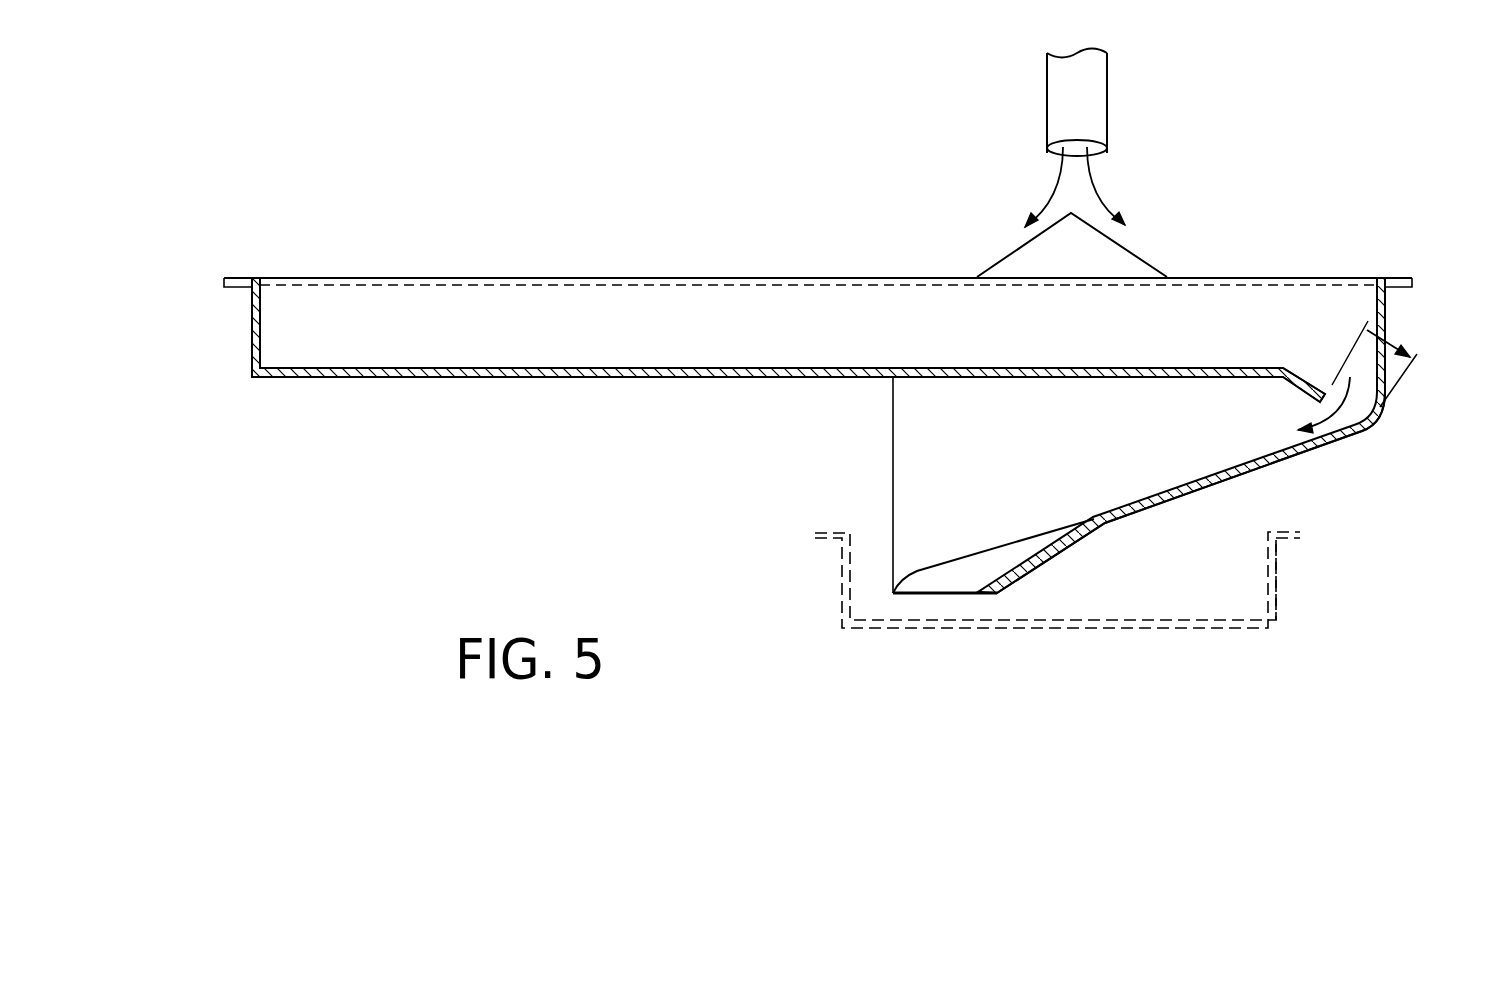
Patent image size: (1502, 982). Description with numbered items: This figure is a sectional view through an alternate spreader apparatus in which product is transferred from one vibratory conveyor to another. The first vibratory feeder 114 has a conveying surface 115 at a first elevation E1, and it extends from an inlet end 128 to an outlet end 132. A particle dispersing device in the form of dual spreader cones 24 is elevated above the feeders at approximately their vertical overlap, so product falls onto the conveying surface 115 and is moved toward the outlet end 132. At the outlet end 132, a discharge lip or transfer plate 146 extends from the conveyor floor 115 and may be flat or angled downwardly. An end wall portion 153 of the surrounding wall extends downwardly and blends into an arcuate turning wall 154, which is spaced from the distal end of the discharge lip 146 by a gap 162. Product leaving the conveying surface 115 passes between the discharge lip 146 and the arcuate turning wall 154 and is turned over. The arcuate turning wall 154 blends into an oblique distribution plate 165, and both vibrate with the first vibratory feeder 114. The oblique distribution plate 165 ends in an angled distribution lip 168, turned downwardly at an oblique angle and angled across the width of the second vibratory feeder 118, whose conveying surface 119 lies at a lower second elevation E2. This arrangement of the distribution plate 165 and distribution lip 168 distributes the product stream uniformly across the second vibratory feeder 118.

The dual spreader cones 24 is at (1130, 250).
The first vibratory feeder 114 is at (548, 277).
The conveying surface 115 is at (727, 367).
The inlet end 128 is at (380, 315).
The outlet end 132 is at (1315, 312).
The discharge lip 146 is at (1317, 373).
The end wall portion 153 is at (1387, 303).
The arcuate turning wall 154 is at (1387, 403).
The gap 162 is at (1390, 345).
The oblique distribution plate 165 is at (1207, 478).
The angled distribution lip 168 is at (953, 570).
The second vibratory feeder 118 is at (1305, 532).
The conveying surface 119 is at (1242, 622).
The first elevation E1 is at (248, 367).
The second elevation E2 is at (1276, 622).